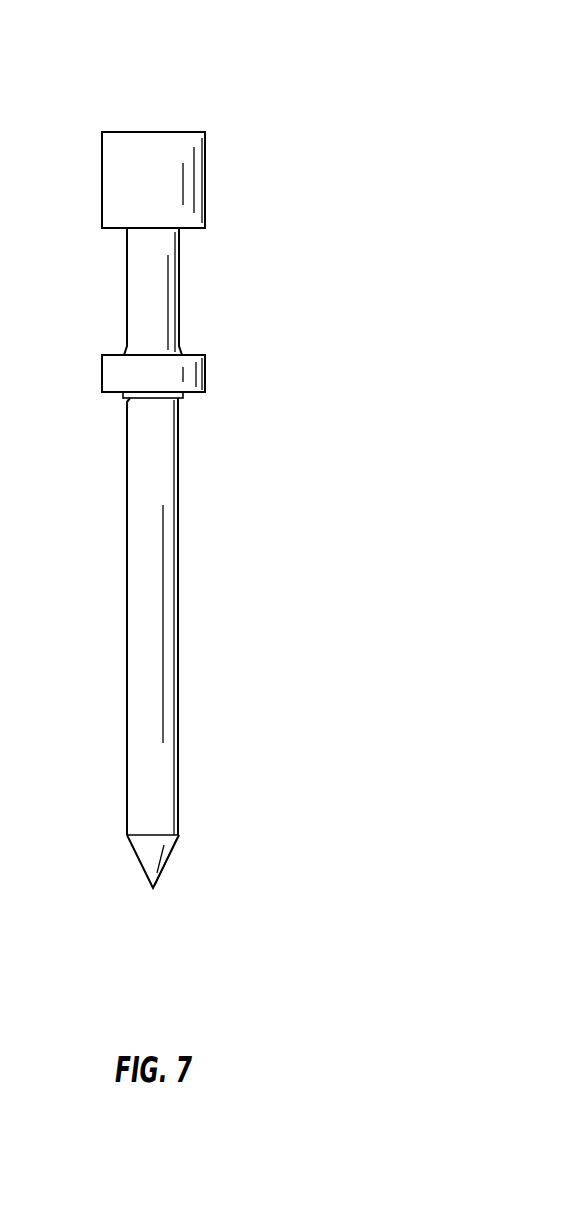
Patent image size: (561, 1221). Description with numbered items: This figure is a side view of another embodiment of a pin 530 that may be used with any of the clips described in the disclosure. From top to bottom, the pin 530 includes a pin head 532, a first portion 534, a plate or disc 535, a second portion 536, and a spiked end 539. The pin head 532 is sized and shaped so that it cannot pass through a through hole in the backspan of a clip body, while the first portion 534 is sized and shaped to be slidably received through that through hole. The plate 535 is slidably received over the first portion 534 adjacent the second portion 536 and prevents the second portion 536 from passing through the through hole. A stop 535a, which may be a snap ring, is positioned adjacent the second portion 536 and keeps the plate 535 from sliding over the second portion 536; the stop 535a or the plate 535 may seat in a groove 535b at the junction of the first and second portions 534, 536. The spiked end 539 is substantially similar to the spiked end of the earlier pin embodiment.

The pin 530 is at (153, 127).
The pin head 532 is at (205, 203).
The first portion 534 is at (162, 293).
The plate 535 is at (205, 375).
The stop 535a is at (183, 397).
The groove 535b is at (180, 400).
The second portion 536 is at (165, 477).
The spiked end 539 is at (153, 888).